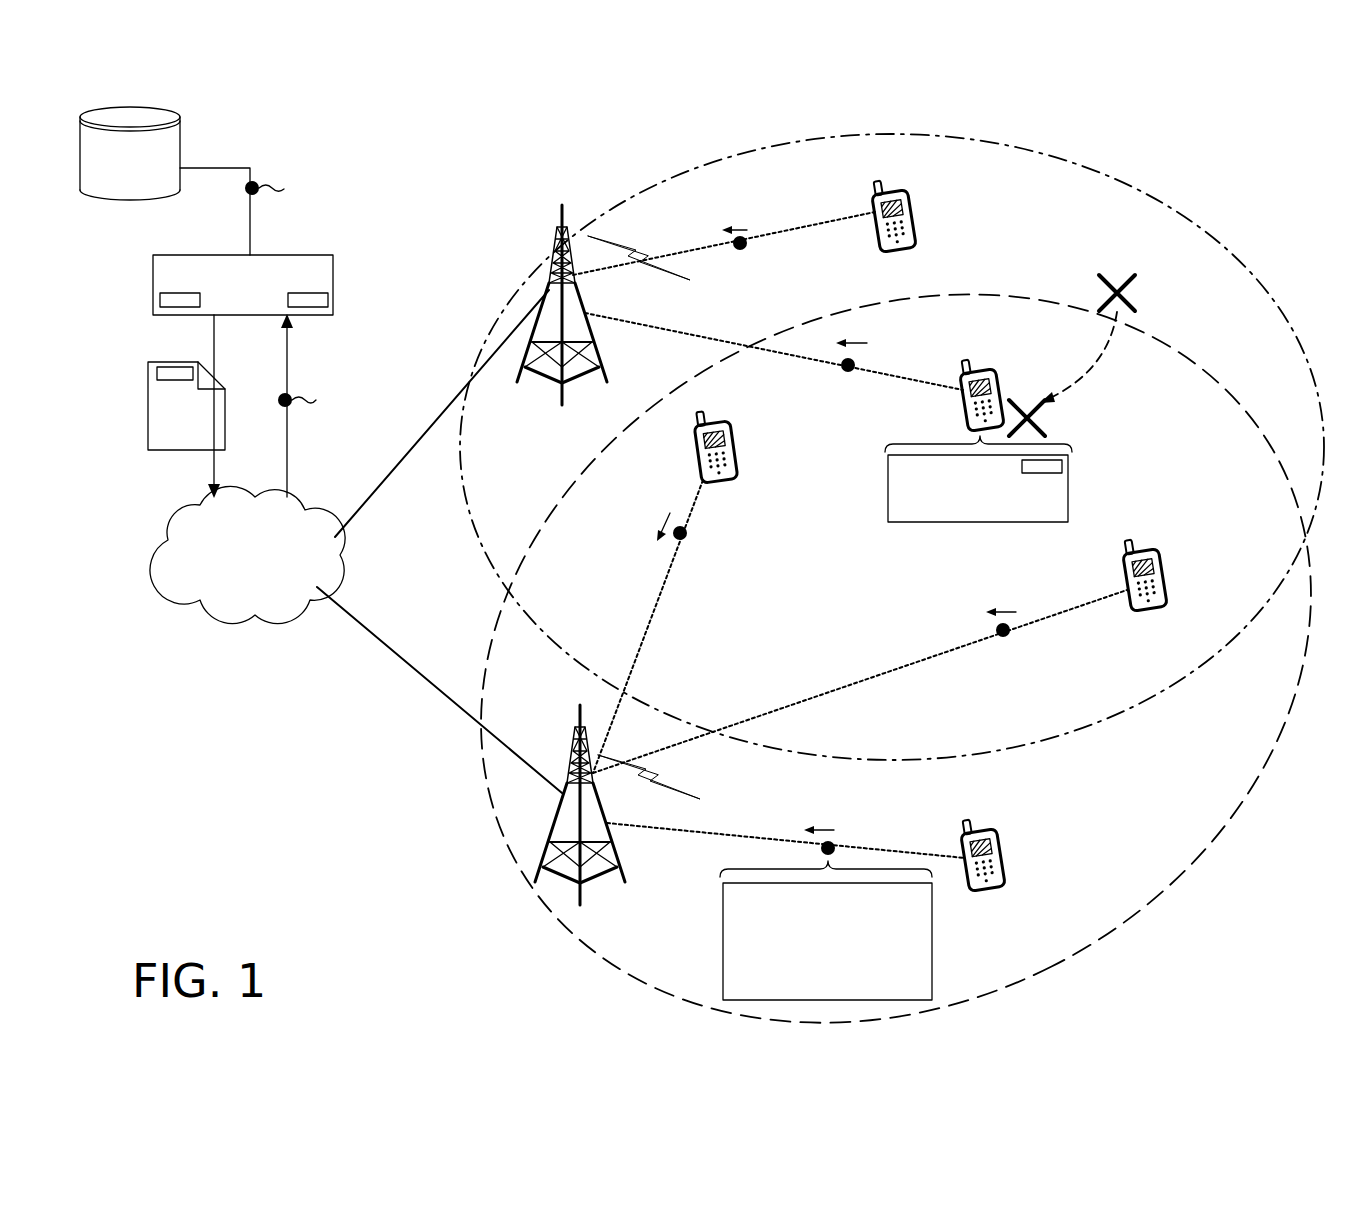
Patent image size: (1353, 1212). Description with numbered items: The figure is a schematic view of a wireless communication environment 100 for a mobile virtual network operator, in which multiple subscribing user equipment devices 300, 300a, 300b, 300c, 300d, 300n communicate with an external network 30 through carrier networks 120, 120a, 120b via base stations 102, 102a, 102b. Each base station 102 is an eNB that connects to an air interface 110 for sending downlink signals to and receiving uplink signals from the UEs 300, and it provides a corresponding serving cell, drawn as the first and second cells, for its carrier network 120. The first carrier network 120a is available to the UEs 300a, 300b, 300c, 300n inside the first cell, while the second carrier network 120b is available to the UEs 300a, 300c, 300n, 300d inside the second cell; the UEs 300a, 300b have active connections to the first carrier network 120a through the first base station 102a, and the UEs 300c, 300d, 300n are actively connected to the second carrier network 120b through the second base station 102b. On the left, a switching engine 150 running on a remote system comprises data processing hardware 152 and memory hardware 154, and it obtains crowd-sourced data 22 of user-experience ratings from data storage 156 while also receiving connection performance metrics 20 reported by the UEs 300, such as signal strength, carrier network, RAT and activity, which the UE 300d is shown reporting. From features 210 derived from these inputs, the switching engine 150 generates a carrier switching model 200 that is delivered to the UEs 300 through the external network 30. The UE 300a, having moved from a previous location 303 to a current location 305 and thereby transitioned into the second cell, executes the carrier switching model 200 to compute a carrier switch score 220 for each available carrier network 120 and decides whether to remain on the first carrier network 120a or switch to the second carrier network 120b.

The wireless communication environment 100 is at (1238, 142).
The base station 102 is at (554, 541).
The first base station 102a is at (562, 228).
The second base station 102b is at (580, 728).
The air interface 110 is at (641, 256).
The carrier network 120 is at (854, 647).
The first carrier network 120a is at (683, 173).
The second carrier network 120b is at (507, 607).
The switching engine 150 is at (246, 293).
The data processing hardware 152 is at (329, 300).
The memory hardware 154 is at (159, 300).
The data storage 156 is at (182, 152).
The connection performance metrics 20 is at (280, 396).
The crowd-sourced data 22 is at (246, 193).
The external network 30 is at (255, 497).
The carrier switching model 200 is at (607, 423).
The features 210 is at (186, 364).
The carrier switch score 220 is at (1064, 466).
The user equipment device 300 is at (960, 520).
The user equipment device 300a is at (990, 373).
The user equipment device 300b is at (903, 198).
The user equipment device 300c is at (727, 427).
The user equipment device 300d is at (990, 833).
The user equipment device 300n is at (1152, 553).
The previous location 303 is at (1135, 283).
The current location 305 is at (1046, 408).